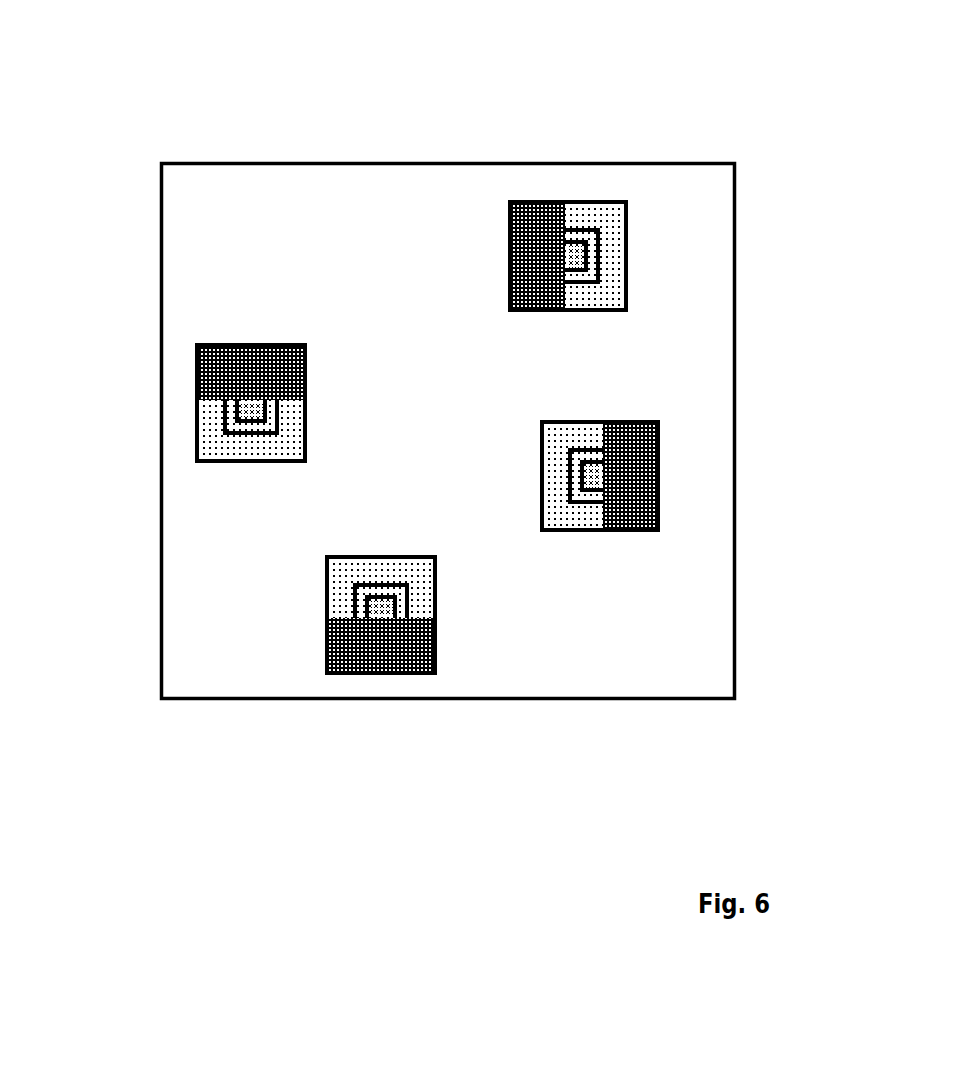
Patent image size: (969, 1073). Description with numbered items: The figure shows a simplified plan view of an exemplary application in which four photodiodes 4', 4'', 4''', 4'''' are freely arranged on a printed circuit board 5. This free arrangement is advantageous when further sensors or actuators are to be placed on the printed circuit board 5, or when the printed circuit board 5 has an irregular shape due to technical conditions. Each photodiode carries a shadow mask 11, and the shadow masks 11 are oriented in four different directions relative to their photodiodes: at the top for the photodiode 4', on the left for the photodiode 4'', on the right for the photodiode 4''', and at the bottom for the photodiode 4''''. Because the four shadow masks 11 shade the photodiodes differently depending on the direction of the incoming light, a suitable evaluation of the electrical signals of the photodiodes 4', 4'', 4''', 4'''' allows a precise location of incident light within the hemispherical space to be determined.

The printed circuit board 5 is at (532, 162).
The shadow mask 11 is at (540, 257).
The photodiode 4' is at (194, 404).
The photodiode 4'' is at (660, 252).
The photodiode 4''' is at (680, 476).
The photodiode 4'''' is at (406, 662).